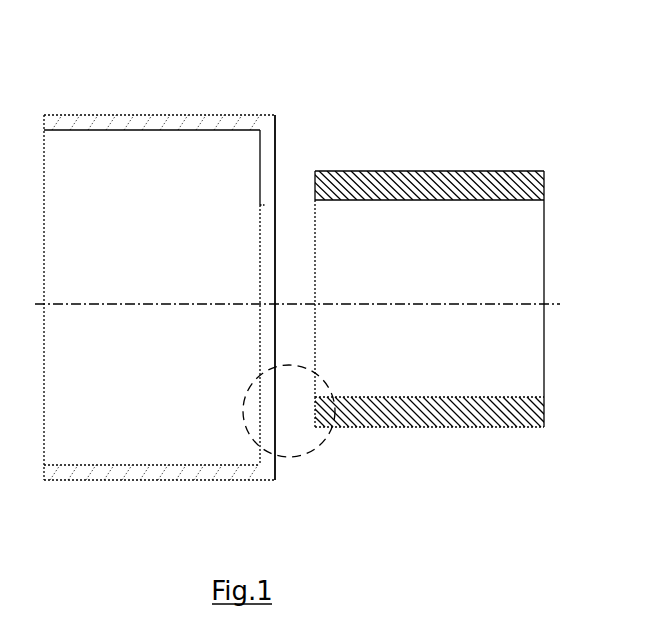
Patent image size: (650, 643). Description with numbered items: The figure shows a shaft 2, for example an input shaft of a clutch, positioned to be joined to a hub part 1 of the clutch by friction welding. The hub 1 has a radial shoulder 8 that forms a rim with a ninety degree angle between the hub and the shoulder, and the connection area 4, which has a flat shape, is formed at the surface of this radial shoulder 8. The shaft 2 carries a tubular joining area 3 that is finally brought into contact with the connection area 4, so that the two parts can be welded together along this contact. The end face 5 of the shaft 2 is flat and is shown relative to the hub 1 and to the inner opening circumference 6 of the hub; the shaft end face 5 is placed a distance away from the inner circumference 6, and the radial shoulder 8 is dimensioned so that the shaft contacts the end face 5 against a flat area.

The hub part 1 is at (176, 128).
The shaft 2 is at (392, 188).
The joining area with tubular shape 3 is at (320, 205).
The connection area 4 is at (252, 182).
The end face of shaft 5 is at (313, 187).
The inner circumference 6 is at (270, 390).
The radial shoulder 8 is at (268, 444).